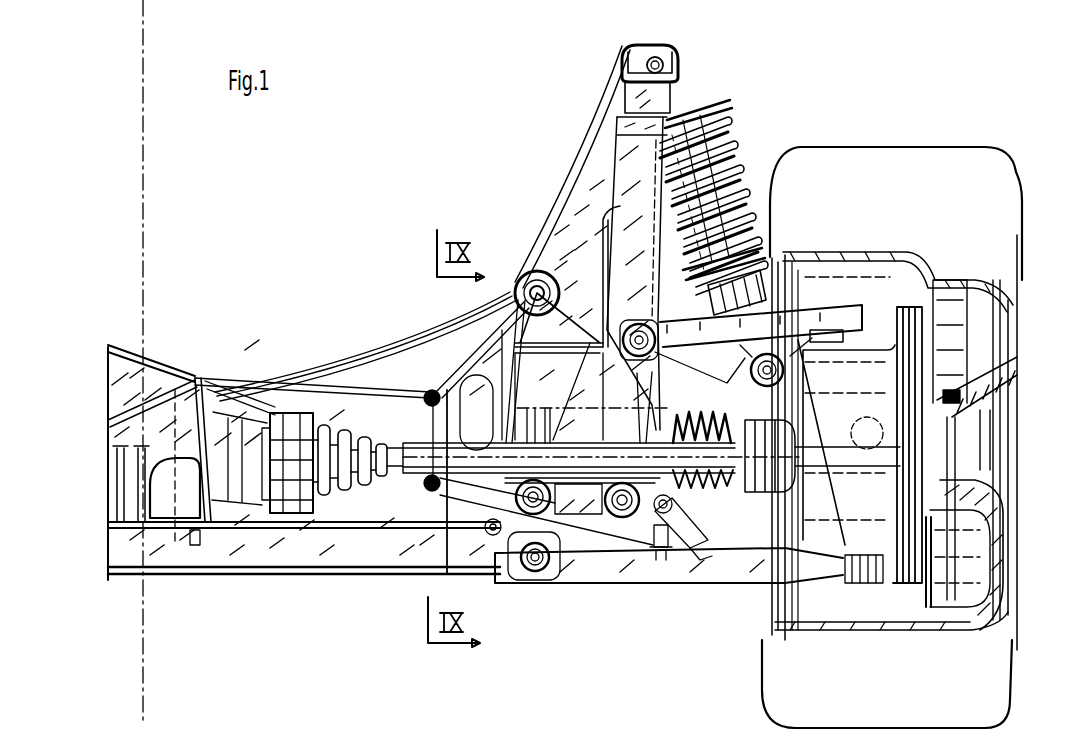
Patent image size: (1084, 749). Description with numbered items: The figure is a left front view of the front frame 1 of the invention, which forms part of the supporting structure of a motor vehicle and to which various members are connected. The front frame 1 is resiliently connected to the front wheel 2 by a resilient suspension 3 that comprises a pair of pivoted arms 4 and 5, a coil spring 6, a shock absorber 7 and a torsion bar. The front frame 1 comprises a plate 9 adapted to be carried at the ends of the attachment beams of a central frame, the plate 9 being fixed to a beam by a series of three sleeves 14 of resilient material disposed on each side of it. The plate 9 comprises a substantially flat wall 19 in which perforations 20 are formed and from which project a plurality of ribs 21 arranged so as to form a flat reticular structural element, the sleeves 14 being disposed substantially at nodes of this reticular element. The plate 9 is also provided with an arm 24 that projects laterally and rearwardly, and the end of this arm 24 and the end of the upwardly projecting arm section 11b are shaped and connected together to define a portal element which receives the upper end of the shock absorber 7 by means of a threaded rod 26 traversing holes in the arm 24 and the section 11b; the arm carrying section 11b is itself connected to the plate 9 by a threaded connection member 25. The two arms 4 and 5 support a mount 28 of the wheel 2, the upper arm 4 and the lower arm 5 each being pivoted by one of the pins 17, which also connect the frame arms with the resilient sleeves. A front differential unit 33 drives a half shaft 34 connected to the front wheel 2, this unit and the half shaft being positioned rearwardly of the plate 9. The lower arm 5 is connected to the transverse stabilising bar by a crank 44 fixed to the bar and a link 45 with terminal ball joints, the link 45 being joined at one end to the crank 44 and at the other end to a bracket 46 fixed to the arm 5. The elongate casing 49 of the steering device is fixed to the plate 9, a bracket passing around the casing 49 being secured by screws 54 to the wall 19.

The front frame 1 is at (348, 290).
The front wheel 2 is at (862, 160).
The resilient suspension 3 is at (748, 118).
The upper pivoted arm 4 is at (712, 348).
The lower pivoted arm 5 is at (715, 582).
The coil spring 6 is at (745, 178).
The shock absorber 7 is at (762, 312).
The plate 9 is at (342, 365).
The arm section 11b is at (627, 165).
The resilient sleeve 14 is at (532, 273).
The pin 17 is at (652, 356).
The flat wall 19 is at (205, 377).
The perforation 20 is at (158, 507).
The rib 21 is at (110, 412).
The arm 24 is at (590, 156).
The threaded connection member 25 is at (493, 537).
The threaded rod 26 is at (655, 45).
The wheel mount 28 is at (870, 377).
The front differential unit 33 is at (132, 378).
The half shaft 34 is at (748, 475).
The crank and link 44 is at (660, 520).
The stud 45 is at (668, 560).
The bracket 46 is at (688, 512).
The casing 49 is at (428, 392).
The screw 54 is at (447, 578).